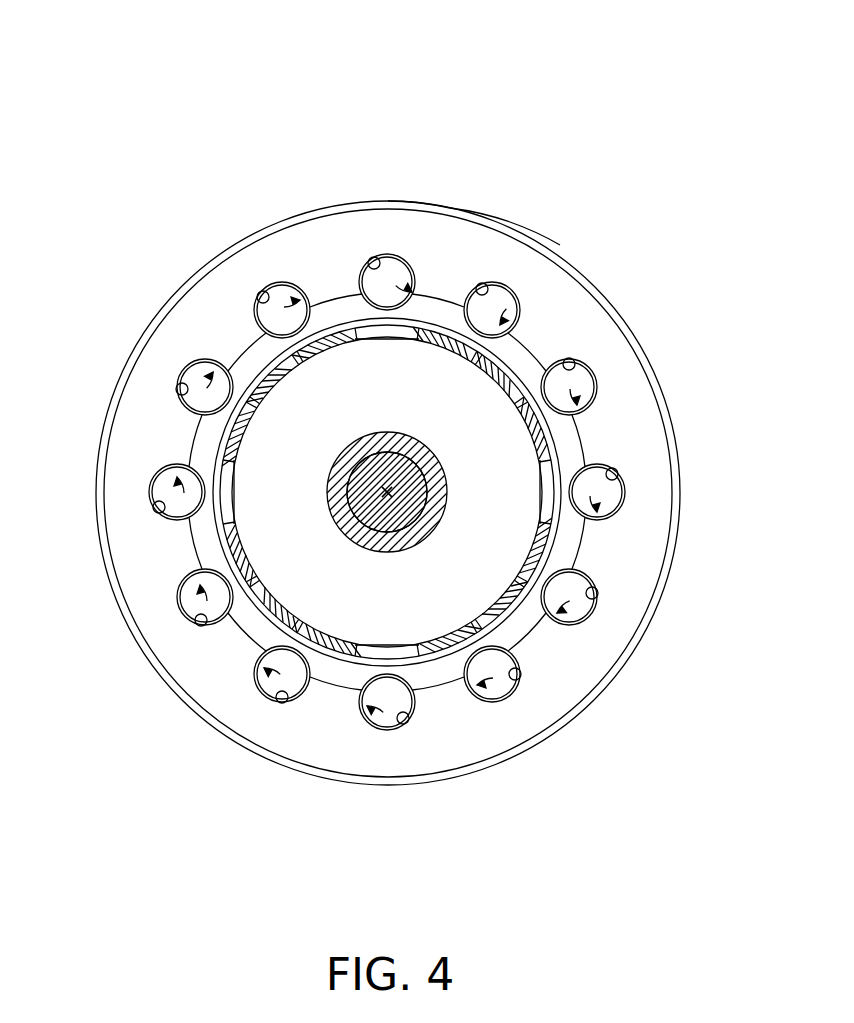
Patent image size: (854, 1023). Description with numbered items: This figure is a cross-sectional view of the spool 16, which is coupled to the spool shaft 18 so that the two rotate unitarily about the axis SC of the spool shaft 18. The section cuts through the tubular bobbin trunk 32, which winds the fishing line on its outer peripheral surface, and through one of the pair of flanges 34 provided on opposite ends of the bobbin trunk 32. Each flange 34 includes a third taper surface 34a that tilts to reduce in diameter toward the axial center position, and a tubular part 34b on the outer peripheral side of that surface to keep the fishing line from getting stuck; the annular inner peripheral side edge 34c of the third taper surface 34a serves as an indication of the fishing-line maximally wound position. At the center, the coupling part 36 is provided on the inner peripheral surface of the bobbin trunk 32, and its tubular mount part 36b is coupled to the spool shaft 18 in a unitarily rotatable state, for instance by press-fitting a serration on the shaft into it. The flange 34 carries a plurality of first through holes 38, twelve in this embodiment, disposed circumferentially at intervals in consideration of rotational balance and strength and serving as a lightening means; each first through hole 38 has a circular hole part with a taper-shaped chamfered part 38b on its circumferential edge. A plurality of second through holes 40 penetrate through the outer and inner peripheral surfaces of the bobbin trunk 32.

The spool 16 is at (290, 168).
The spool shaft 18 is at (366, 552).
The bobbin trunk 32 is at (433, 323).
The flange 34 is at (580, 265).
The third taper surface 34a is at (442, 207).
The tubular part 34b is at (502, 220).
The annular inner peripheral side edge 34c is at (516, 298).
The coupling part 36 is at (314, 475).
The tubular mount part 36b is at (440, 452).
The first through hole 38 is at (400, 262).
The chamfered part 38b is at (370, 266).
The second through hole 40 is at (355, 326).
The axis SC is at (334, 523).